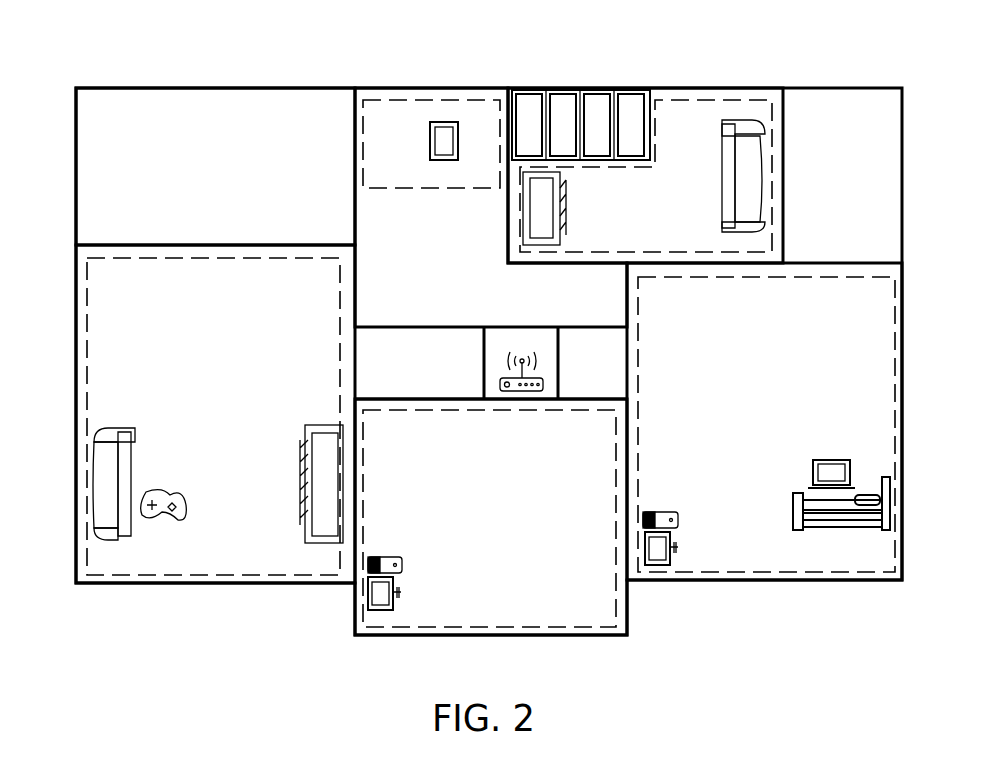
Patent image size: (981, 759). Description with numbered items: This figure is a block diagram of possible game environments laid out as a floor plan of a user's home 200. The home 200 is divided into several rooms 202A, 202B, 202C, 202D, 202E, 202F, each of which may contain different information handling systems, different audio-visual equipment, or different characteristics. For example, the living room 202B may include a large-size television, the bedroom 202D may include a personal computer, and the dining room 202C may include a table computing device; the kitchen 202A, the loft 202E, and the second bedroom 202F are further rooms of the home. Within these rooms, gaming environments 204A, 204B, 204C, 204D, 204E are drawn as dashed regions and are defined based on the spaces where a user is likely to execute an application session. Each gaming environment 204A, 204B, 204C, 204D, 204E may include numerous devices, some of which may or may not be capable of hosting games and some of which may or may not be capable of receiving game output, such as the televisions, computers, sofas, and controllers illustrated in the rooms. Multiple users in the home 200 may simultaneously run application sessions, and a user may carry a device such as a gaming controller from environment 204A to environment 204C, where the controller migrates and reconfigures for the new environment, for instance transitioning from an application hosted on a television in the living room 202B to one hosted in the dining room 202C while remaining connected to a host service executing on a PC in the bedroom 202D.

The user's home 200 is at (100, 73).
The room 202A is at (103, 180).
The living room 202B is at (126, 347).
The dining room 202C is at (362, 218).
The bedroom 202D is at (500, 600).
The room 202E is at (680, 130).
The room 202F is at (750, 550).
The gaming environment 204A is at (241, 580).
The gaming environment 204B is at (436, 99).
The gaming environment 204C is at (405, 633).
The gaming environment 204D is at (714, 250).
The gaming environment 204E is at (735, 282).